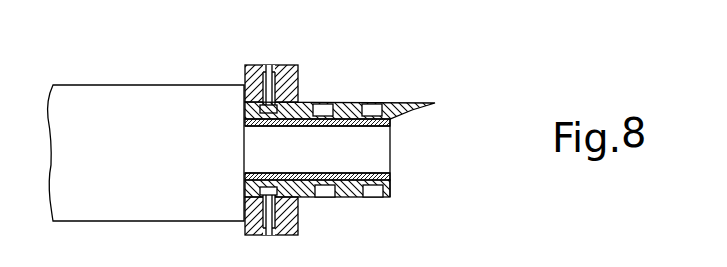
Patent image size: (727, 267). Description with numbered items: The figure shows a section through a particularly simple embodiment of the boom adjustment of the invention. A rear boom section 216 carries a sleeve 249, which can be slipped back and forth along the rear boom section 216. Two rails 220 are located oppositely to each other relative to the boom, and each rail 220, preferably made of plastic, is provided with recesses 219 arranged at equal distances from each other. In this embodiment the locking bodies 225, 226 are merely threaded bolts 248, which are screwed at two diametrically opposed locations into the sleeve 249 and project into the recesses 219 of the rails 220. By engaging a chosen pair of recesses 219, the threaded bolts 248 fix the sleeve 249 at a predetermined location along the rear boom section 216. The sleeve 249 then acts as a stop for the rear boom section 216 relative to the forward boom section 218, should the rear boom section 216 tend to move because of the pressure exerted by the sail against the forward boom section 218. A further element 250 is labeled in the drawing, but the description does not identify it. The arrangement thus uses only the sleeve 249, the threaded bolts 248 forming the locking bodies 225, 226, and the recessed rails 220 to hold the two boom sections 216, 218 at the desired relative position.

The forward boom section 218 is at (97, 95).
The sleeve 249 is at (244, 70).
The threaded bolt 248 is at (287, 65).
The locking body 225 is at (300, 101).
The recess 219 is at (370, 105).
The rail 220 is at (398, 117).
The rear boom section 216 is at (382, 152).
The lower flange 250 is at (231, 232).
The locking body 226 is at (276, 201).